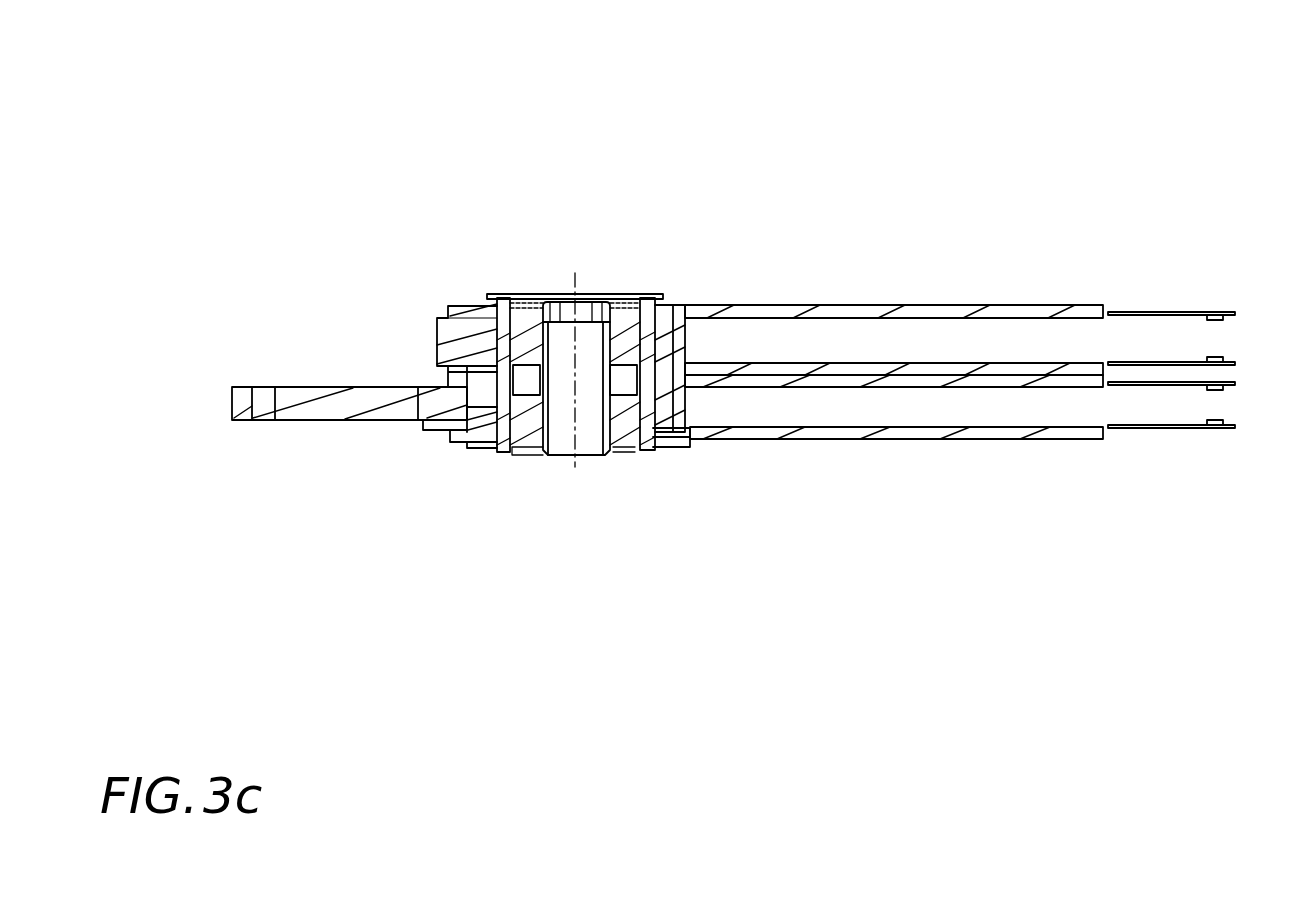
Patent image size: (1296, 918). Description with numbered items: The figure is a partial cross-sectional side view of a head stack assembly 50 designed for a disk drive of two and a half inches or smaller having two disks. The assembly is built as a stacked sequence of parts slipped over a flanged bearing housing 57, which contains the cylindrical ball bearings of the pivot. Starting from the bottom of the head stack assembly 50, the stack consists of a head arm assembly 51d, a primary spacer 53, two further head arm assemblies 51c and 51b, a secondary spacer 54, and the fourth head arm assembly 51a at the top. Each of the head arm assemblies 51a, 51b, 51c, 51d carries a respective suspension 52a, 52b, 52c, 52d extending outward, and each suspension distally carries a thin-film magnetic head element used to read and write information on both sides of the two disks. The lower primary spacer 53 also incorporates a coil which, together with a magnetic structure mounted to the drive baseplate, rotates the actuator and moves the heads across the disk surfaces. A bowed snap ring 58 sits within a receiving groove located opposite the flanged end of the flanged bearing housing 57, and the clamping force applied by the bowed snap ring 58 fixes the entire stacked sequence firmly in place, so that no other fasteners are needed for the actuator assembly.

The head stack assembly 50 is at (366, 68).
The head arm assembly 51a is at (805, 303).
The head arm assembly 51b is at (790, 364).
The head arm assembly 51c is at (835, 387).
The head arm assembly 51d is at (838, 440).
The suspension 52a is at (1187, 312).
The suspension 52b is at (1193, 362).
The suspension 52c is at (1188, 385).
The suspension 52d is at (1198, 428).
The primary spacer 53 is at (322, 386).
The secondary spacer 54 is at (437, 332).
The flanged bearing housing 57 is at (637, 294).
The bowed snap ring 58 is at (512, 455).